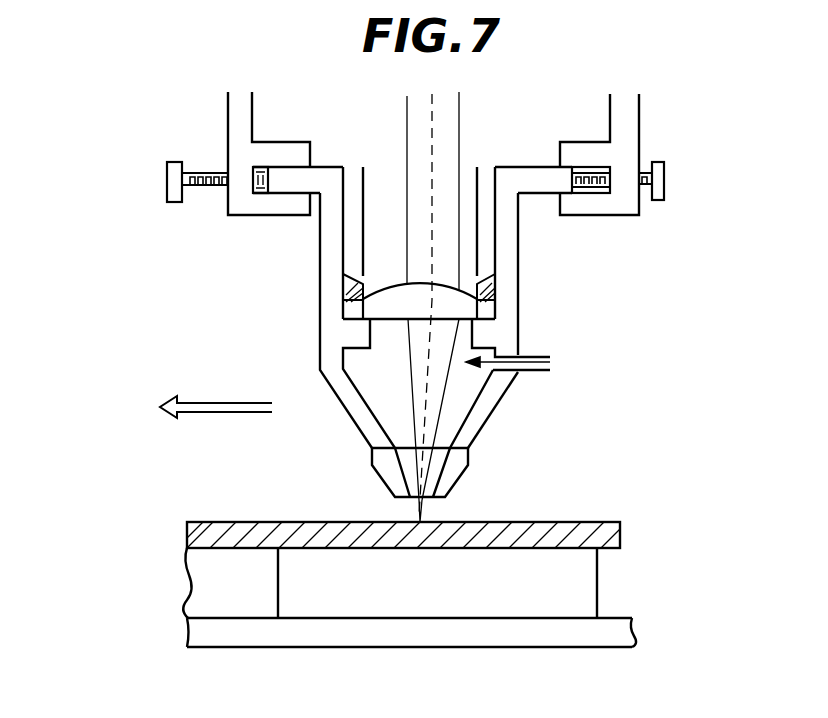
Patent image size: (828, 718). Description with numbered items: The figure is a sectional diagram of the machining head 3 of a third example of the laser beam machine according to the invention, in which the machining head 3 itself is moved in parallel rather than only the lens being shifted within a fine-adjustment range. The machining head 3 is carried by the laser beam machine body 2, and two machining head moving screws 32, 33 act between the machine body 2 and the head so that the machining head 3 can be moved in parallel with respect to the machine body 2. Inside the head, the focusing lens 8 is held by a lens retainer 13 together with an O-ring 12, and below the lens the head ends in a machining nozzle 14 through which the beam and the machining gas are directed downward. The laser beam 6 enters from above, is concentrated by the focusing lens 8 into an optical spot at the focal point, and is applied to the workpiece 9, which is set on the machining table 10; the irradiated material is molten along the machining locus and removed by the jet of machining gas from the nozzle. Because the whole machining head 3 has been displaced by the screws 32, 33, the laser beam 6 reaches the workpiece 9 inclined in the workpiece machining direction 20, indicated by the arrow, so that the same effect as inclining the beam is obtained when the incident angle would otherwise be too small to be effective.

The laser beam machine body 2 is at (639, 118).
The machining head 3 is at (519, 253).
The laser beam 6 is at (448, 126).
The focusing lens 8 is at (394, 285).
The workpiece 9 is at (585, 522).
The machining table 10 is at (615, 618).
The O-ring 12 is at (496, 298).
The lens retainer 13 is at (355, 167).
The machining nozzle 14 is at (469, 455).
The workpiece machining direction 20 is at (219, 402).
The machining head moving screw 32 is at (664, 179).
The machining head moving screw 33 is at (167, 177).